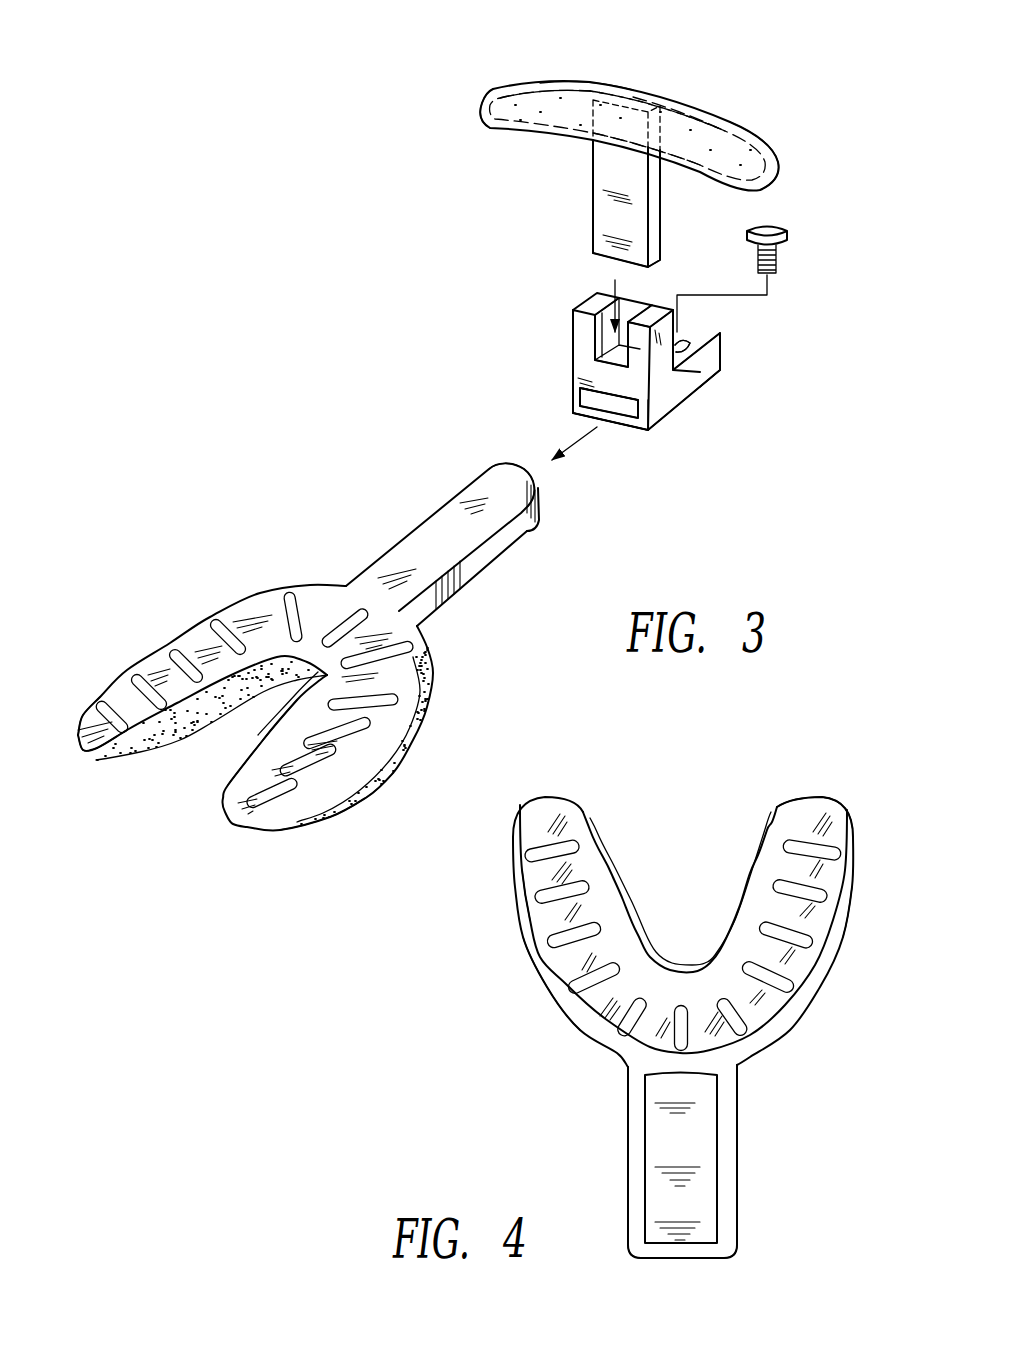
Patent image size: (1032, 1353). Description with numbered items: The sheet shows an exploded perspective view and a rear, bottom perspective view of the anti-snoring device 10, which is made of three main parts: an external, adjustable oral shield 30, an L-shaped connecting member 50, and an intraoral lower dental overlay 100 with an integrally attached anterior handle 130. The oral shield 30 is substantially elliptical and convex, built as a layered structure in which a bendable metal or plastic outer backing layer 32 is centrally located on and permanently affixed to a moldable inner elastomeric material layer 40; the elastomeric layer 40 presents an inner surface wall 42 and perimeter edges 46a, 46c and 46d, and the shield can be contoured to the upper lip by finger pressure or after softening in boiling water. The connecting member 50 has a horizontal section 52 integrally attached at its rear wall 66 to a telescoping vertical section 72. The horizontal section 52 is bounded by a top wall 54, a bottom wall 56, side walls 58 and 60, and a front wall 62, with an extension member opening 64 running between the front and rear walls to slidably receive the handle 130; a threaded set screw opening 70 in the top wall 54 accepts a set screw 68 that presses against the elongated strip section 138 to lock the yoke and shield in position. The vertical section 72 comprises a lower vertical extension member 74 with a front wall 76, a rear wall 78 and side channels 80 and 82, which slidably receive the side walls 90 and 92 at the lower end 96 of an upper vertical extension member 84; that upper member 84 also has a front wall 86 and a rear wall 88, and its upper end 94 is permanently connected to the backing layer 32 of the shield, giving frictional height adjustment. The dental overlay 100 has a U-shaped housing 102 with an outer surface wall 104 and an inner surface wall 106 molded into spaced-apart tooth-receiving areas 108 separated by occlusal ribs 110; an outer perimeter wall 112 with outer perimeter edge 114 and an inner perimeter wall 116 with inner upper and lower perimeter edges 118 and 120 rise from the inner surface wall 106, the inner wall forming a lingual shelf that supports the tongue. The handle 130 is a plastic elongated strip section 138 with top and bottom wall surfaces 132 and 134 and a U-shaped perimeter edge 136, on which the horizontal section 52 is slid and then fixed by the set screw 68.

In FIG. 3, the anti-snoring device 10 is at (772, 212).
In FIG. 3, the oral shield 30 is at (763, 135).
In FIG. 3, the outer backing layer 32 is at (685, 134).
In FIG. 3, the inner elastomeric material layer 40 is at (572, 87).
In FIG. 3, the inner surface wall 42 is at (517, 100).
In FIG. 3, the perimeter edge 46a is at (625, 130).
In FIG. 3, the perimeter edge 46c is at (480, 133).
In FIG. 3, the perimeter edge 46d is at (778, 165).
In FIG. 3, the connecting member 50 is at (460, 257).
In FIG. 3, the horizontal section 52 is at (727, 355).
In FIG. 3, the top wall 54 is at (697, 343).
In FIG. 3, the bottom wall 56 is at (688, 398).
In FIG. 3, the side wall 58 is at (573, 405).
In FIG. 3, the side wall 60 is at (697, 373).
In FIG. 3, the front wall 62 is at (572, 385).
In FIG. 3, the extension member opening 64 is at (597, 400).
In FIG. 3, the rear wall 66 is at (720, 355).
In FIG. 3, the set screw 68 is at (785, 242).
In FIG. 3, the threaded set screw opening 70 is at (732, 399).
In FIG. 3, the telescoping vertical section 72 is at (797, 325).
In FIG. 3, the lower vertical extension member 74 is at (570, 360).
In FIG. 3, the front wall 76 is at (658, 417).
In FIG. 3, the rear wall 78 is at (597, 283).
In FIG. 3, the side channel 80 is at (593, 343).
In FIG. 3, the side channel 82 is at (647, 293).
In FIG. 3, the upper vertical extension member 84 is at (663, 238).
In FIG. 3, the front wall 86 is at (627, 163).
In FIG. 3, the rear wall 88 is at (633, 183).
In FIG. 3, the side wall 90 is at (597, 220).
In FIG. 3, the side wall 92 is at (663, 255).
In FIG. 3, the upper end 94 is at (636, 134).
In FIG. 3, the lower end 96 is at (627, 220).
In FIG. 3, the intraoral lower dental overlay 100 is at (146, 651).
In FIG. 4, the intraoral lower dental overlay 100 is at (929, 835).
In FIG. 3, the housing 102 is at (310, 822).
In FIG. 4, the housing 102 is at (855, 892).
In FIG. 3, the outer surface wall 104 is at (90, 752).
In FIG. 4, the outer surface wall 104 is at (820, 813).
In FIG. 4, the inner surface wall 106 is at (550, 887).
In FIG. 3, the tooth-receiving areas 108 is at (171, 644).
In FIG. 4, the tooth-receiving areas 108 is at (790, 957).
In FIG. 3, the occlusal ribs 110 is at (224, 622).
In FIG. 4, the occlusal ribs 110 is at (563, 933).
In FIG. 3, the outer perimeter wall 112 is at (360, 794).
In FIG. 4, the outer perimeter wall 112 is at (590, 1033).
In FIG. 3, the outer perimeter edge 114 is at (339, 815).
In FIG. 4, the outer perimeter edge 114 is at (553, 997).
In FIG. 3, the inner perimeter wall 116 is at (263, 760).
In FIG. 4, the inner perimeter wall 116 is at (603, 855).
In FIG. 3, the inner upper perimeter edge 118 is at (147, 751).
In FIG. 3, the inner lower perimeter edge 120 is at (217, 722).
In FIG. 4, the inner lower perimeter edge 120 is at (762, 833).
In FIG. 3, the anterior handle 130 is at (433, 511).
In FIG. 4, the anterior handle 130 is at (740, 1118).
In FIG. 3, the top wall surface 132 is at (499, 476).
In FIG. 4, the top wall surface 132 is at (683, 1112).
In FIG. 3, the bottom wall surface 134 is at (489, 554).
In FIG. 4, the bottom wall surface 134 is at (690, 1090).
In FIG. 3, the U-shaped perimeter edge 136 is at (531, 517).
In FIG. 4, the U-shaped perimeter edge 136 is at (637, 1193).
In FIG. 3, the elongated strip section 138 is at (510, 488).
In FIG. 4, the elongated strip section 138 is at (682, 1193).